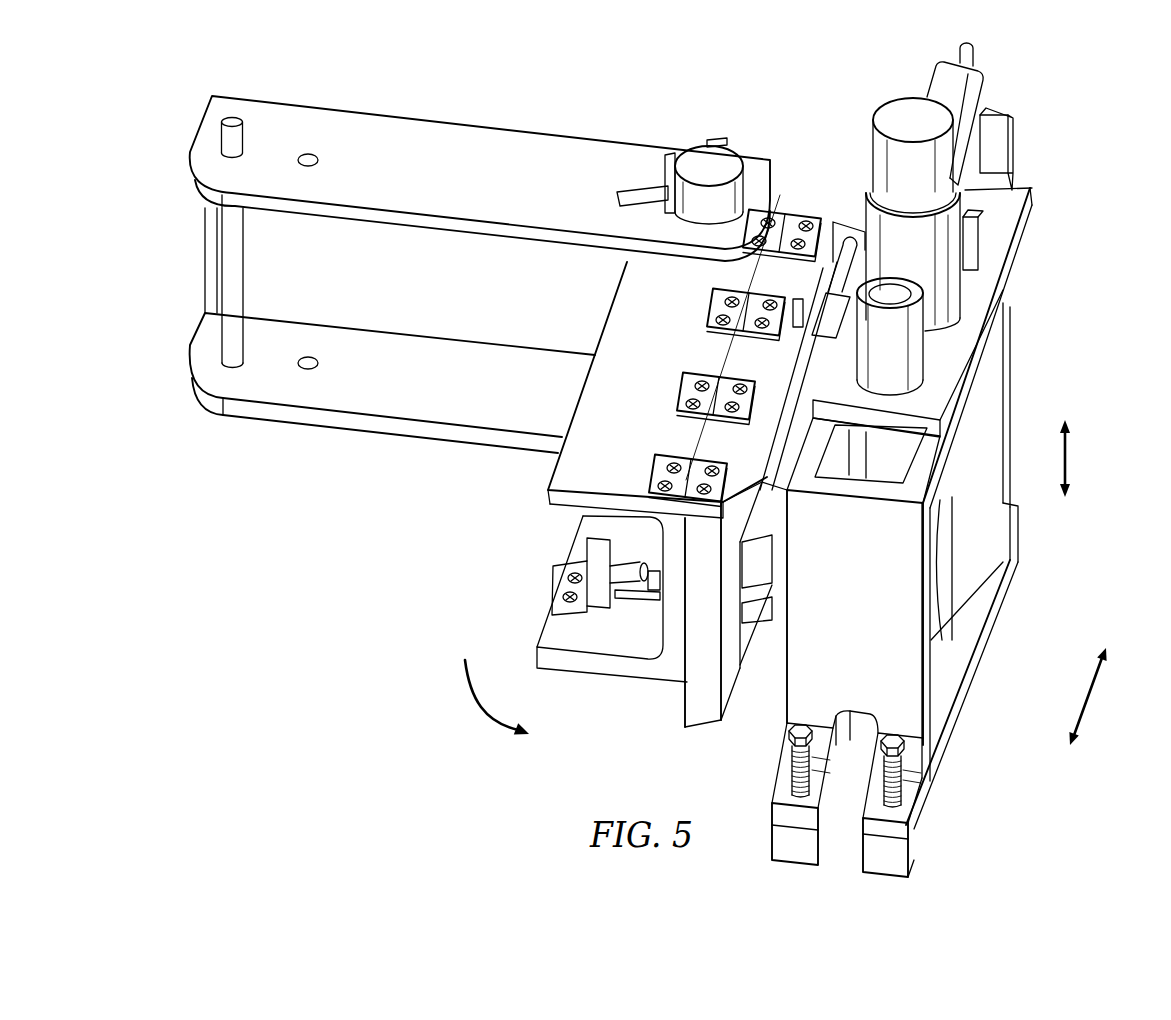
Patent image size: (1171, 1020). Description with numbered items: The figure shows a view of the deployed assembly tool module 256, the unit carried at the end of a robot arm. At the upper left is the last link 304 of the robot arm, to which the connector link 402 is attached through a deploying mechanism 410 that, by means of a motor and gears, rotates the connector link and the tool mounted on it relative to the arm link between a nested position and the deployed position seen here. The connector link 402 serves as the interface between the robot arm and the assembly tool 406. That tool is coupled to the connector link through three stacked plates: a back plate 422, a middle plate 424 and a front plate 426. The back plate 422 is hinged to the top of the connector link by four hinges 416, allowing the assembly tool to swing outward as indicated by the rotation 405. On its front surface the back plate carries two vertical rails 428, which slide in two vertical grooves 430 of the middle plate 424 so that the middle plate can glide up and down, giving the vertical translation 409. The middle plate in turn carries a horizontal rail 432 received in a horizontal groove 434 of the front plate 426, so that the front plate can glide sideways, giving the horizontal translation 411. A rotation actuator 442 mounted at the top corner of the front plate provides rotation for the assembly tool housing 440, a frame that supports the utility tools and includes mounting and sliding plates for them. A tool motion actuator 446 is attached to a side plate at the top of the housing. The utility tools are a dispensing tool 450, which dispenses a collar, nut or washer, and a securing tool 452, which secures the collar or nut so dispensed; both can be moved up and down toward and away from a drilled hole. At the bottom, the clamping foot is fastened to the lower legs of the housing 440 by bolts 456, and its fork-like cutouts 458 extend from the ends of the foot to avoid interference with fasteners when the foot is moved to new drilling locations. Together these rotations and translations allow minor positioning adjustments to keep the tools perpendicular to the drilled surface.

The assembly tool module 256 is at (603, 85).
The last link 304 is at (399, 114).
The connector link 402 is at (598, 320).
The rotation 405 is at (470, 705).
The assembly tool 406 is at (905, 665).
The vertical translation 409 is at (1070, 452).
The deploying mechanism 410 is at (697, 148).
The horizontal translation 411 is at (1093, 697).
The hinges 416 is at (710, 304).
The back plate 422 is at (703, 717).
The middle plate 424 is at (736, 683).
The front plate 426 is at (815, 510).
The vertical rails 428 is at (797, 283).
The vertical grooves 430 is at (790, 343).
The horizontal rail 432 is at (775, 620).
The horizontal groove 434 is at (778, 560).
The assembly tool housing 440 is at (942, 648).
The rotation actuator 442 is at (846, 244).
The tool motion actuator 446 is at (993, 148).
The dispensing tool 450 is at (897, 280).
The securing tool 452 is at (900, 100).
The bolts 456 is at (803, 724).
The fork-like cutouts 458 is at (845, 851).